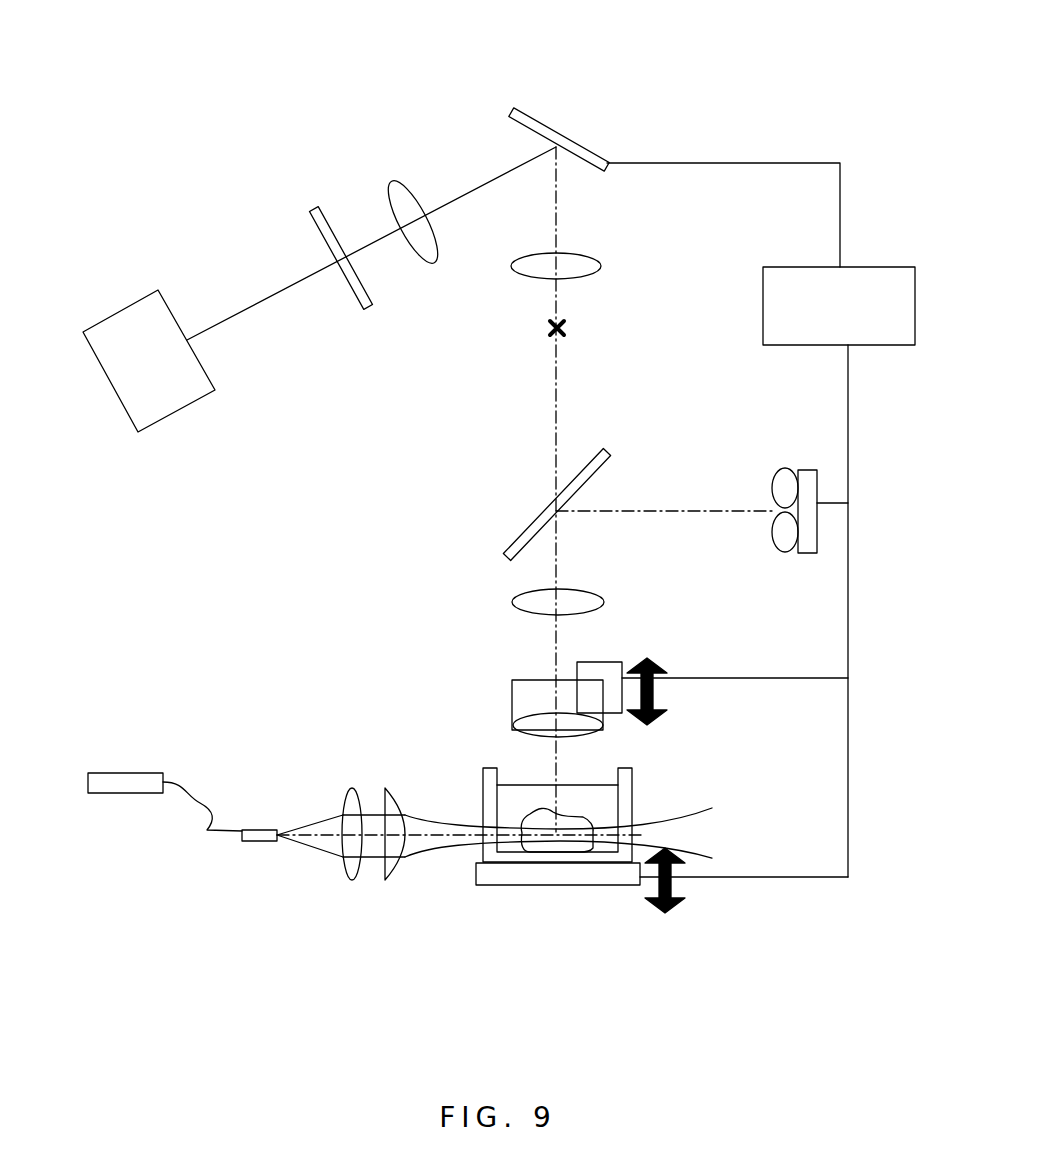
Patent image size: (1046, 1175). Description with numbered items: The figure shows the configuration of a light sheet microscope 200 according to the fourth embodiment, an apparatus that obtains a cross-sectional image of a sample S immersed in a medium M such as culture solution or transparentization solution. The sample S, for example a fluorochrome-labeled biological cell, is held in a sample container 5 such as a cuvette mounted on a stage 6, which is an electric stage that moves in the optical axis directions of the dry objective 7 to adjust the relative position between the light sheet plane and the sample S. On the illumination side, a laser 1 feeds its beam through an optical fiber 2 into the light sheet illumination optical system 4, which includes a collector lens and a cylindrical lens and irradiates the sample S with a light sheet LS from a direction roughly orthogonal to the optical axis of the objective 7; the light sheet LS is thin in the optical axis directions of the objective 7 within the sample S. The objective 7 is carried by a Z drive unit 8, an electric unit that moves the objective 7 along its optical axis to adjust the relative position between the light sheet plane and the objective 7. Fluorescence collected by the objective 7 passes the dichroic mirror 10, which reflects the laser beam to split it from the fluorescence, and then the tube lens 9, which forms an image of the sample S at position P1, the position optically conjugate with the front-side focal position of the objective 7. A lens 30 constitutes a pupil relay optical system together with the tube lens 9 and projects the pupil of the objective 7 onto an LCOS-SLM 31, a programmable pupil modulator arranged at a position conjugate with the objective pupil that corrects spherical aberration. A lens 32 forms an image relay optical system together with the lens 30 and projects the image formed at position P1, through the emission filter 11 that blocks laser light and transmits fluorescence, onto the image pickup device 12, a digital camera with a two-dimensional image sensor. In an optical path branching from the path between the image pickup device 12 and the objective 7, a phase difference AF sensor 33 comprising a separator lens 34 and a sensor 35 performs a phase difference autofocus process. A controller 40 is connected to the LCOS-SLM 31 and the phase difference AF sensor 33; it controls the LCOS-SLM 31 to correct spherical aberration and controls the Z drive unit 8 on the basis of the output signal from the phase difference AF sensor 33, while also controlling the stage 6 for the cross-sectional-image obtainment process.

The light sheet microscope 200 is at (302, 62).
The laser 1 is at (113, 795).
The optical fiber 2 is at (197, 840).
The light sheet illumination optical system 4 is at (333, 893).
The light sheet LS is at (438, 828).
The sample container 5 is at (633, 802).
The stage 6 is at (476, 870).
The medium M is at (525, 795).
The sample S is at (580, 820).
The dry objective 7 is at (512, 682).
The Z drive unit 8 is at (612, 662).
The tube lens 9 is at (518, 592).
The dichroic mirror 10 is at (537, 517).
The position P1 is at (550, 338).
The lens 30 is at (512, 264).
The LCOS-SLM 31 is at (510, 113).
The lens 32 is at (392, 185).
The emission filter 11 is at (313, 212).
The image pickup device 12 is at (172, 305).
The phase difference AF sensor 33 is at (830, 402).
The separator lens 34 is at (784, 530).
The sensor 35 is at (805, 470).
The controller 40 is at (763, 300).